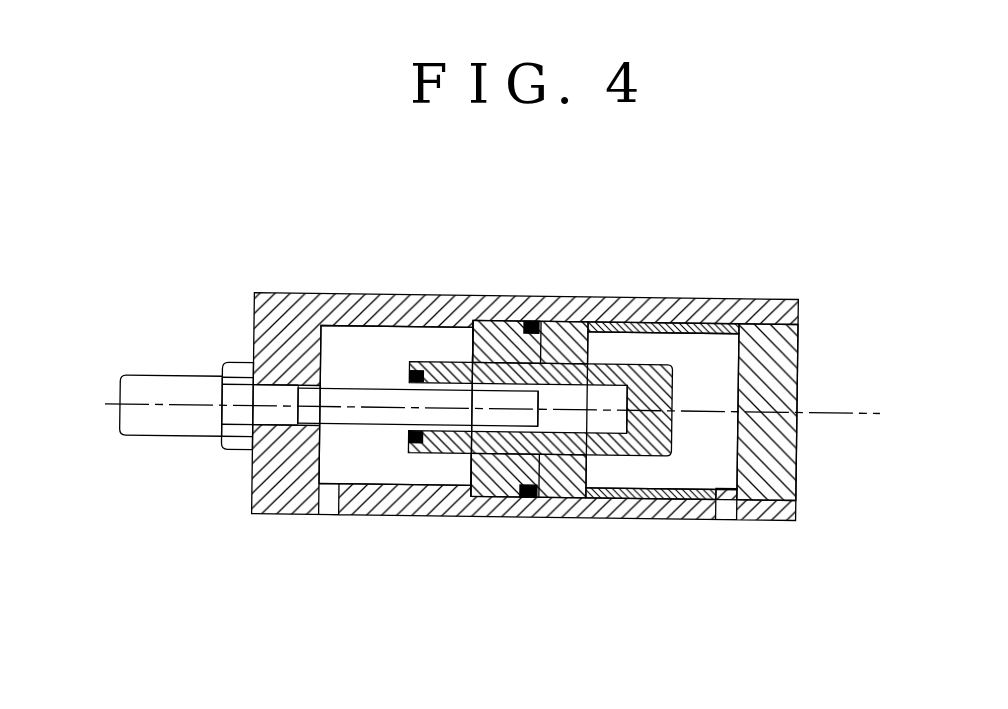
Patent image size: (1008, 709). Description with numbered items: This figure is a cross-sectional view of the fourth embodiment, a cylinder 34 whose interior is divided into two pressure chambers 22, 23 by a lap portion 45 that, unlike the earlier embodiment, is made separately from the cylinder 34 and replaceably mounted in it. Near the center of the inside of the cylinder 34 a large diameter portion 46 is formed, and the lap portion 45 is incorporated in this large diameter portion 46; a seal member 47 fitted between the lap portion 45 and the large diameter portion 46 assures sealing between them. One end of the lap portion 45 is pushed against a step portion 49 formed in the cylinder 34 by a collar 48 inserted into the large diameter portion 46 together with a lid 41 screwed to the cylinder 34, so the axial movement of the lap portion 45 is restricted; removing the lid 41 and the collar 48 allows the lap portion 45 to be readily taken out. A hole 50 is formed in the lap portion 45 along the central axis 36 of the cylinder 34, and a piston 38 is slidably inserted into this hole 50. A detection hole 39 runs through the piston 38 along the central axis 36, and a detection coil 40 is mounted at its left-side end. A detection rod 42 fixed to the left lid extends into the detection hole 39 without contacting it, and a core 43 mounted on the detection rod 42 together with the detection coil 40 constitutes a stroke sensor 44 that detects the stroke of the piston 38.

The pressure chamber 22 is at (683, 475).
The pressure chamber 23 is at (372, 472).
The cylinder 34 is at (417, 302).
The central axis 36 is at (820, 409).
The piston 38 is at (645, 436).
The detection hole 39 is at (598, 424).
The detection coil 40 is at (409, 364).
The lid 41 is at (762, 337).
The detection rod 42 is at (286, 420).
The core 43 is at (363, 397).
The stroke sensor 44 is at (384, 253).
The lap portion 45 is at (565, 334).
The large diameter portion 46 is at (503, 323).
The seal member 47 is at (540, 323).
The collar 48 is at (673, 313).
The step portion 49 is at (473, 322).
The hole 50 is at (612, 321).